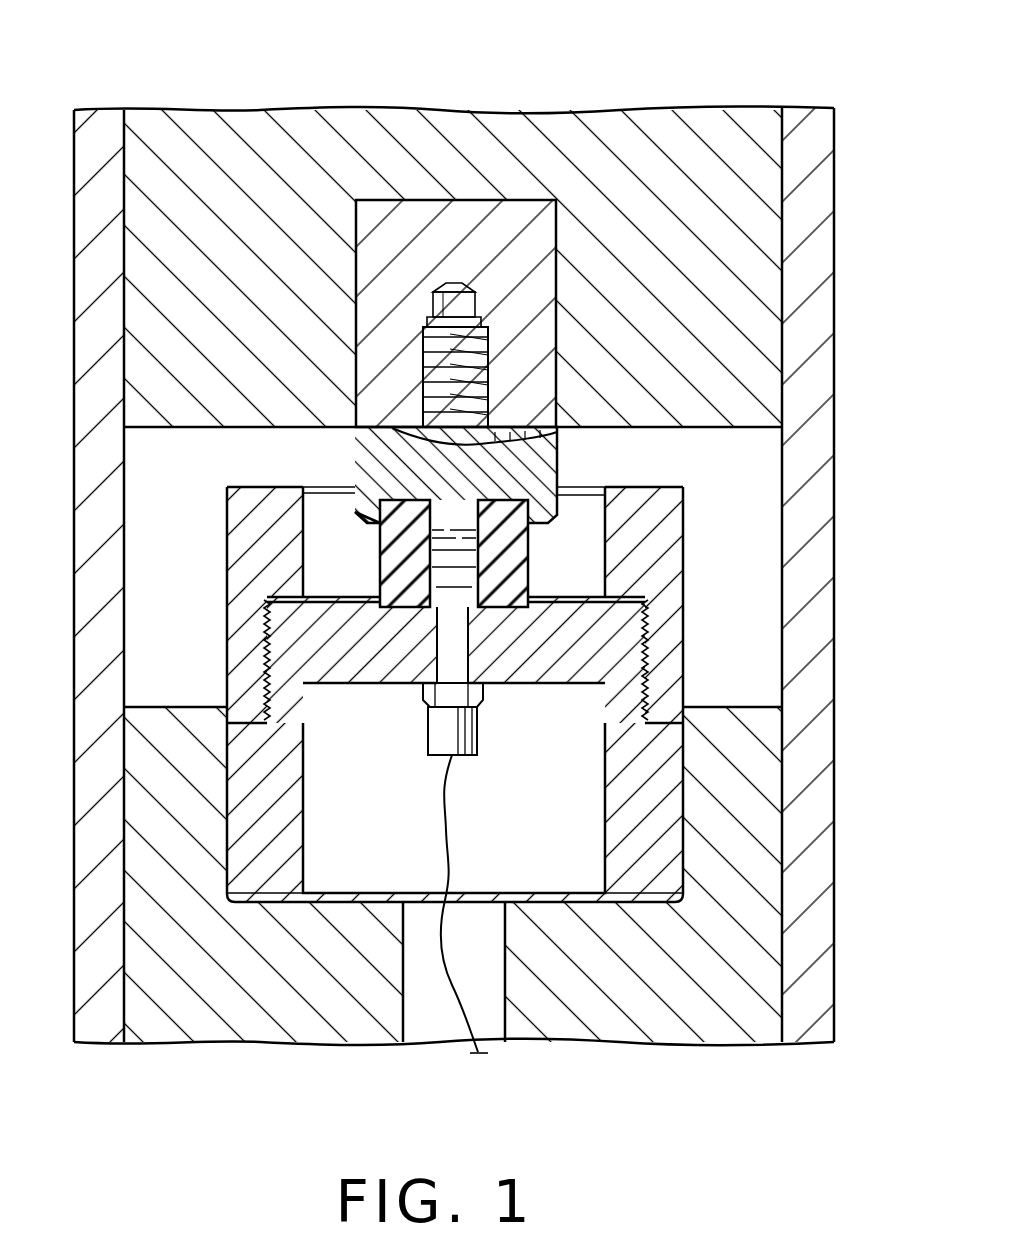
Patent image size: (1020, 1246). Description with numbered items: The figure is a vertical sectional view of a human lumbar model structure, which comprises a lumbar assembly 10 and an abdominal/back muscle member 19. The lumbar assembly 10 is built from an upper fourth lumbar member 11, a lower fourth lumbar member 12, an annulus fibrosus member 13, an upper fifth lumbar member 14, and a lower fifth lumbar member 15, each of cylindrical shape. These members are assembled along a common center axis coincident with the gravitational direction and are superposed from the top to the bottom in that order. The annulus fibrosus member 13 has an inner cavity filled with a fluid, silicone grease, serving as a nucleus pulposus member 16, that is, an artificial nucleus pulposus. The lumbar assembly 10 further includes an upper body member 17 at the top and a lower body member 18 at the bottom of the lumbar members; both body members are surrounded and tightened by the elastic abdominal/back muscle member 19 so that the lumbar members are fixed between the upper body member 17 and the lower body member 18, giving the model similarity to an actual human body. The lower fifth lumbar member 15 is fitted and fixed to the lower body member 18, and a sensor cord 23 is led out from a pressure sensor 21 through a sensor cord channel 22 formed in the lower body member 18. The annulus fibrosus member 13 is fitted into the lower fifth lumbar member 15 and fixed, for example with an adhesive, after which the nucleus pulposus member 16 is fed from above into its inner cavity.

The lumbar assembly 10 is at (540, 98).
The upper fourth lumbar member 11 is at (557, 283).
The lower fourth lumbar member 12 is at (557, 452).
The annulus fibrosus member 13 is at (530, 560).
The upper fifth lumbar member 14 is at (683, 663).
The lower fifth lumbar member 15 is at (683, 862).
The nucleus pulposus member 16 is at (450, 527).
The upper body member 17 is at (710, 110).
The lower body member 18 is at (668, 1042).
The abdominal/back muscle member 19 is at (836, 178).
The pressure sensor 21 is at (478, 733).
The sensor cord channel 22 is at (403, 1007).
The sensor cord 23 is at (445, 807).